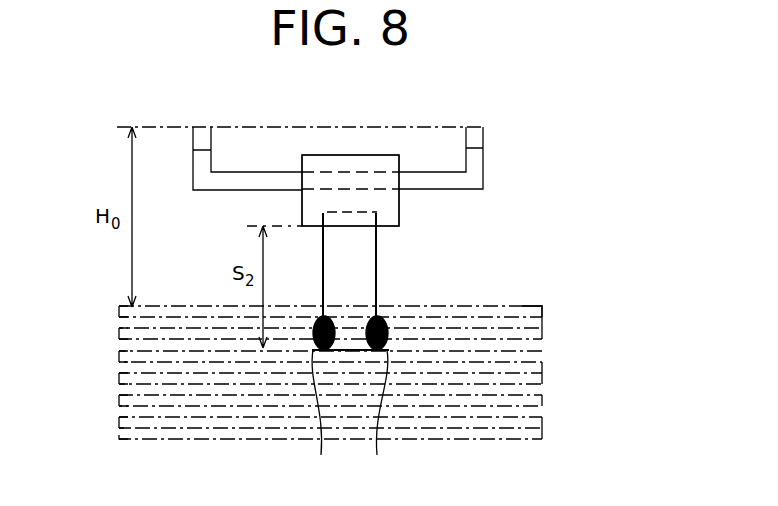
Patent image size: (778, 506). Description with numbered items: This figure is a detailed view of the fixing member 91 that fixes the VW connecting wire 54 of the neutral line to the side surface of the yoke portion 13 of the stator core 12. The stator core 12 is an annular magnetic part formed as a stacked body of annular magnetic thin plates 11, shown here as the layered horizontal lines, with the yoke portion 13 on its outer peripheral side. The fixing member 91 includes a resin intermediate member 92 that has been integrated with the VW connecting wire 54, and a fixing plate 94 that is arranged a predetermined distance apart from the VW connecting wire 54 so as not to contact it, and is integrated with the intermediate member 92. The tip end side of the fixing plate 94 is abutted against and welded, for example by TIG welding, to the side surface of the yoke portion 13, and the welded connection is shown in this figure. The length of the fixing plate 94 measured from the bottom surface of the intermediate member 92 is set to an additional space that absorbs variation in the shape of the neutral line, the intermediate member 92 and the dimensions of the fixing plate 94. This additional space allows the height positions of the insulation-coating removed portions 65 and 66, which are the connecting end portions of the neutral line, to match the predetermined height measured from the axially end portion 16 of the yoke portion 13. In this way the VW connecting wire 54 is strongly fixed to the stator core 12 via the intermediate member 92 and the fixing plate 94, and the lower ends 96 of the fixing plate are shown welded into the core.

The magnetic thin plate 11 is at (121, 345).
The stator core 12 is at (476, 333).
The yoke portion 13 is at (350, 333).
The axially end portion 16 is at (528, 294).
The VW connecting wire 54 is at (222, 187).
The insulation-coating removed portion 65 is at (479, 138).
The insulation-coating removed portion 66 is at (193, 149).
The fixing member 91 is at (455, 232).
The intermediate member 92 is at (376, 164).
The fixing plate 94 is at (378, 254).
The lead end 96 is at (349, 418).